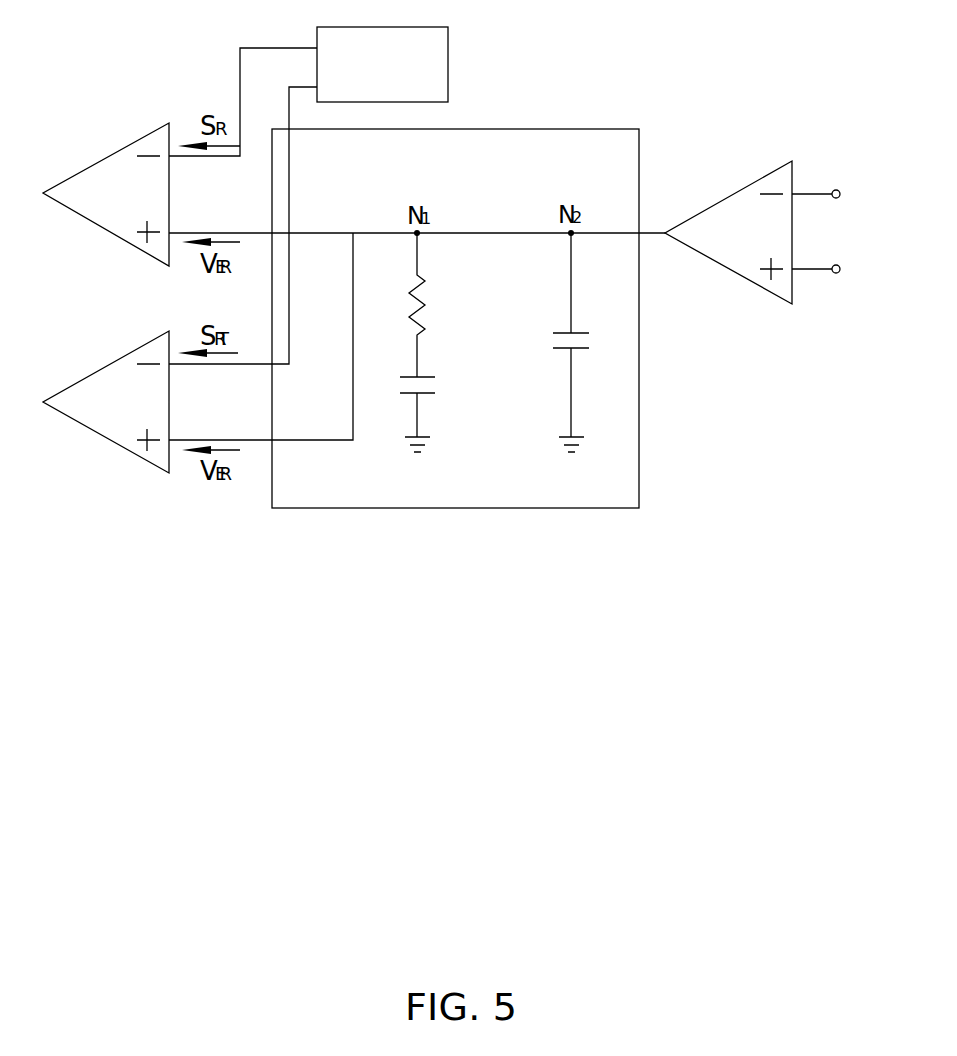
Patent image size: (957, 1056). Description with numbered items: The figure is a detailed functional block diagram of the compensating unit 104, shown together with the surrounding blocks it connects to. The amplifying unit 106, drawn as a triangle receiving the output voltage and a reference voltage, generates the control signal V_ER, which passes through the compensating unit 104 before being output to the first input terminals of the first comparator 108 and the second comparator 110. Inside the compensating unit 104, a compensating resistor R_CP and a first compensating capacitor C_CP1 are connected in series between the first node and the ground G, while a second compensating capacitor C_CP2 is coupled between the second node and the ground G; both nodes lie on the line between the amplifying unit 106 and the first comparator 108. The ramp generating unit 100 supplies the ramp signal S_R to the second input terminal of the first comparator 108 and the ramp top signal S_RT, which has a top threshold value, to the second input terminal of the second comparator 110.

The ramp generating unit 100 is at (403, 78).
The compensating unit 104 is at (351, 167).
The amplifying unit 106 is at (753, 245).
The first comparator 108 is at (132, 205).
The second comparator 110 is at (132, 418).